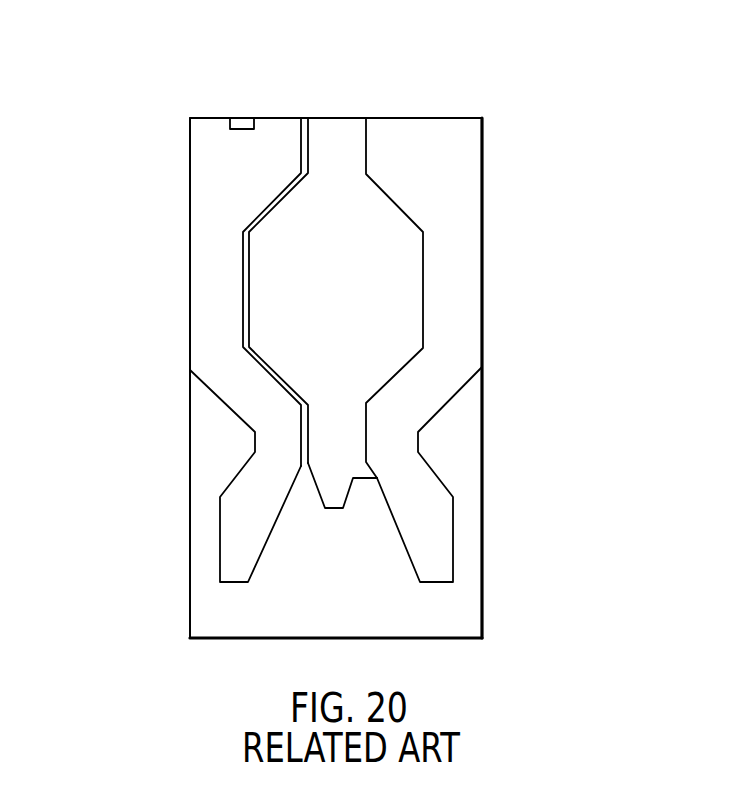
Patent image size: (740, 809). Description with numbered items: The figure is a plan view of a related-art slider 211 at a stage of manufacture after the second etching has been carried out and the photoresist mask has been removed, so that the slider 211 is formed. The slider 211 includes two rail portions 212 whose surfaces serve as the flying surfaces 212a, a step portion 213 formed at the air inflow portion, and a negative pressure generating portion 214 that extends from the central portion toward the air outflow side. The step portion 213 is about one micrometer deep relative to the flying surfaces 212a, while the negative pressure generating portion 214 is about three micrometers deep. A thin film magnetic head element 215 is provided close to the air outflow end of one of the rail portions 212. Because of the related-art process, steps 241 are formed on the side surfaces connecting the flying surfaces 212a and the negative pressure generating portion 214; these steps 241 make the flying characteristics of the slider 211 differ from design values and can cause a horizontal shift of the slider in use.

The slider 211 is at (488, 178).
The rail portions 212 is at (190, 295).
The flying surfaces 212a is at (212, 343).
The step portion 213 is at (473, 610).
The negative pressure generating portion 214 is at (392, 255).
The thin film magnetic head element 215 is at (245, 118).
The steps 241 is at (243, 233).